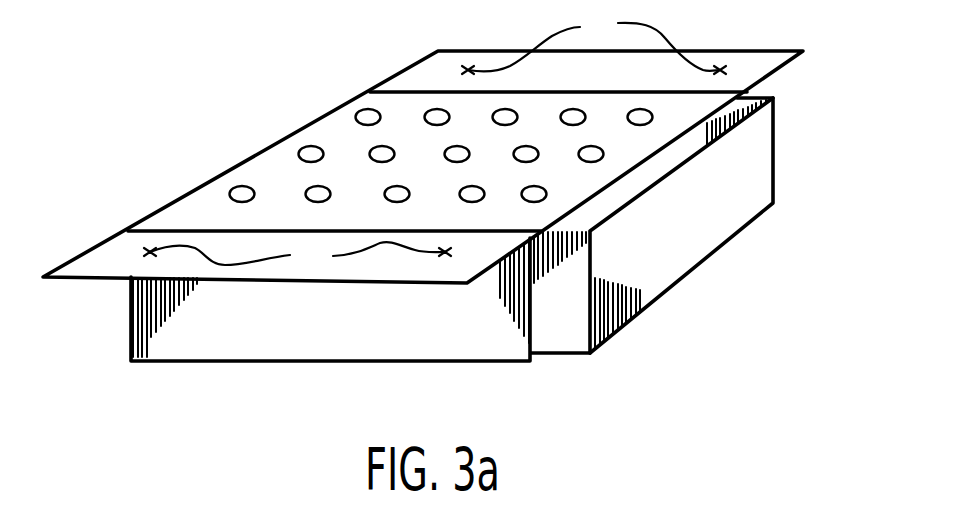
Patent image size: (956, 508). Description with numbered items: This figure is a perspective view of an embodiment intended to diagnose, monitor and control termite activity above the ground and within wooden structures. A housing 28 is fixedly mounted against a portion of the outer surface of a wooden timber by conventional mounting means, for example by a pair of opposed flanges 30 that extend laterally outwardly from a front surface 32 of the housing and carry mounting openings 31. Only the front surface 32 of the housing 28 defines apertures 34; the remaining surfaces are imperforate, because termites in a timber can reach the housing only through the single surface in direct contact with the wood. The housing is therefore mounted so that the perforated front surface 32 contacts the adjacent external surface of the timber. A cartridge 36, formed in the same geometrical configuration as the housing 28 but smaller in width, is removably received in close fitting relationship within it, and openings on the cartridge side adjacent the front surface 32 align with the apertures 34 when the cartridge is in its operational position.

The housing 28 is at (468, 313).
The flanges 30 is at (478, 58).
The mounting openings 31 is at (435, 142).
The front surface 32 is at (582, 182).
The apertures 34 is at (303, 149).
The cartridge 36 is at (640, 287).